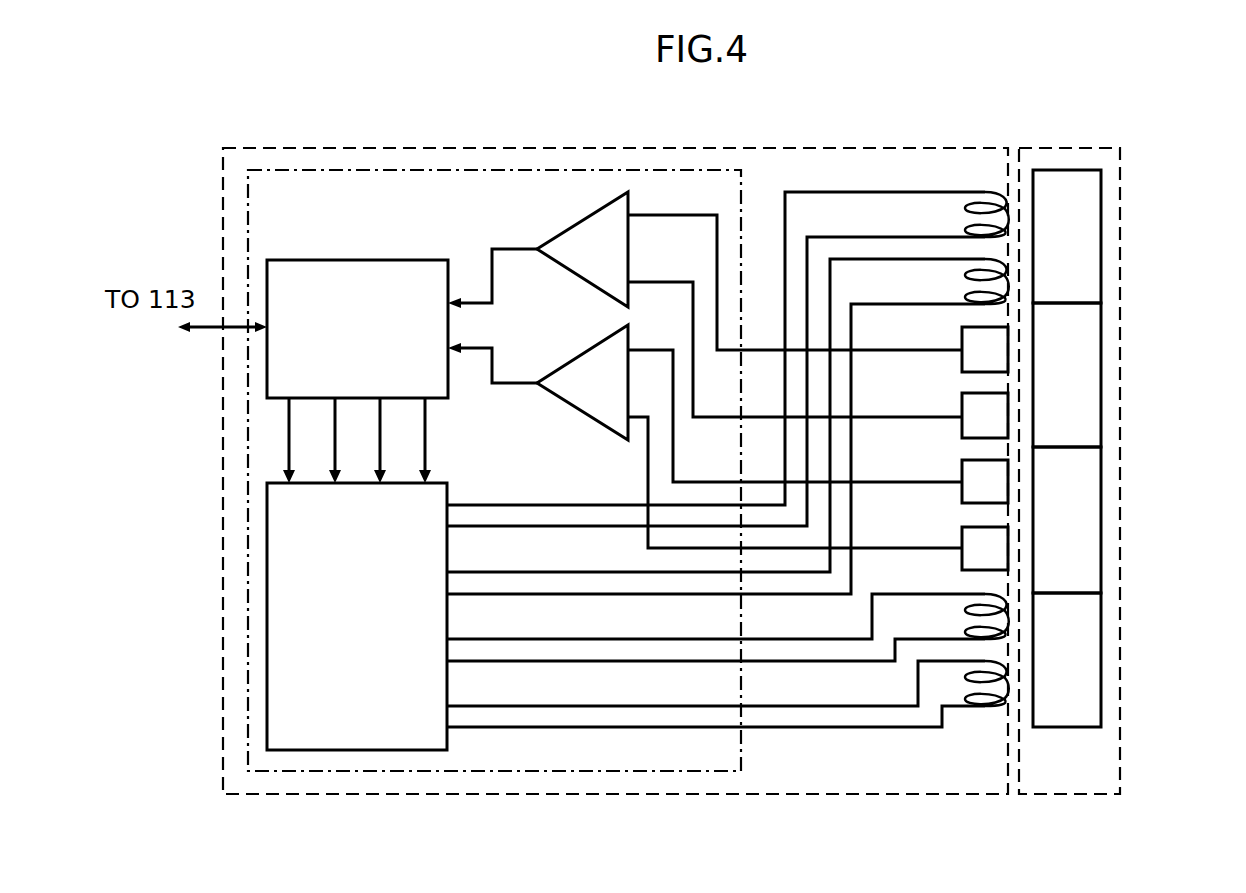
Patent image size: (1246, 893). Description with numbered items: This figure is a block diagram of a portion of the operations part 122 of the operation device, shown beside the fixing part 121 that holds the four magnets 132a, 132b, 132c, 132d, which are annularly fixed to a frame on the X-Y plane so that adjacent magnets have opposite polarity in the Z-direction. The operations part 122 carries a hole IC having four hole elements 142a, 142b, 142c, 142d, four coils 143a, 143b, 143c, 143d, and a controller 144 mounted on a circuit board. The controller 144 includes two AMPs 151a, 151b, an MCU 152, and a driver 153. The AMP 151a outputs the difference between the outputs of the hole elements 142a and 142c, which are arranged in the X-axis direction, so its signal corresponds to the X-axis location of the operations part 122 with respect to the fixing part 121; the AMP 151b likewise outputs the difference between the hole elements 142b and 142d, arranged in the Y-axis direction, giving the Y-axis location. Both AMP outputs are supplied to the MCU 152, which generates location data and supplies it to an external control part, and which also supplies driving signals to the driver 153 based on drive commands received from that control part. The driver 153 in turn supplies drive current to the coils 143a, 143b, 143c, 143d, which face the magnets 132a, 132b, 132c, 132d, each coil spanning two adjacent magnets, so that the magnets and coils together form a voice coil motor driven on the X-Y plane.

The fixing part 121 is at (1040, 152).
The operations part 122 is at (287, 147).
The magnet 132a is at (1101, 192).
The magnet 132b is at (1101, 325).
The magnet 132c is at (1101, 460).
The magnet 132d is at (1101, 615).
The hole element 142a is at (818, 293).
The hole element 142b is at (818, 426).
The hole element 142c is at (818, 360).
The hole element 142d is at (818, 493).
The coil 143a is at (728, 359).
The coil 143b is at (728, 426).
The coil 143c is at (728, 627).
The coil 143d is at (728, 711).
The controller 144 is at (533, 775).
The AMP 151a is at (585, 229).
The AMP 151b is at (583, 372).
The MCU 152 is at (337, 258).
The driver 153 is at (332, 750).